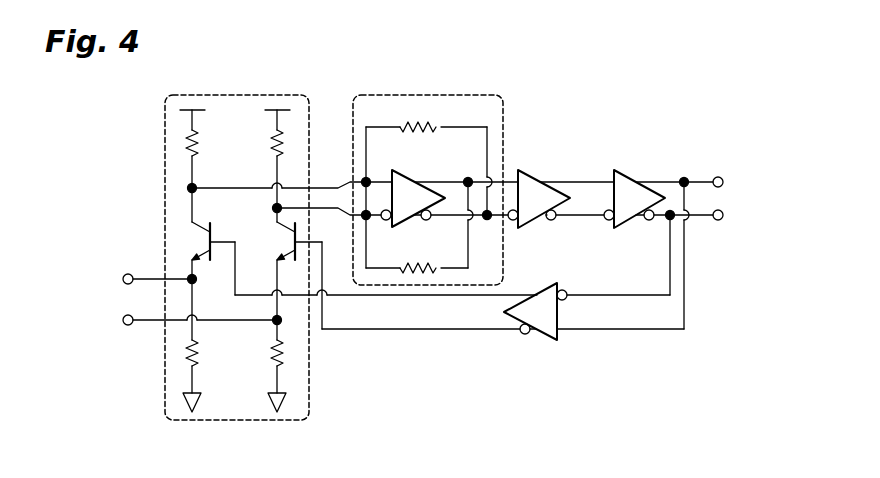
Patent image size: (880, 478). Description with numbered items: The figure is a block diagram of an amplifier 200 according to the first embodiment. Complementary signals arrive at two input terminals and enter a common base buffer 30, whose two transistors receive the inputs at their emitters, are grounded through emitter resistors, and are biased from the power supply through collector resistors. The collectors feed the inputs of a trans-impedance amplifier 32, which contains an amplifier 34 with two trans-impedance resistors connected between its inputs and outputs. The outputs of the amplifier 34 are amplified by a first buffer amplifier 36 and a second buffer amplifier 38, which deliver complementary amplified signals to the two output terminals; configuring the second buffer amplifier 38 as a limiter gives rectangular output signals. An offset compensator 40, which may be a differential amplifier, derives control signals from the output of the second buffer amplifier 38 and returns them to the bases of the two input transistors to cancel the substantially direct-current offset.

The amplifier 200 is at (553, 72).
The common base buffer 30 is at (243, 95).
The trans-impedance amplifier 32 is at (430, 95).
The amplifier 34 is at (415, 221).
The first buffer amplifier 36 is at (530, 170).
The second buffer amplifier 38 is at (626, 170).
The offset compensator 40 is at (557, 340).